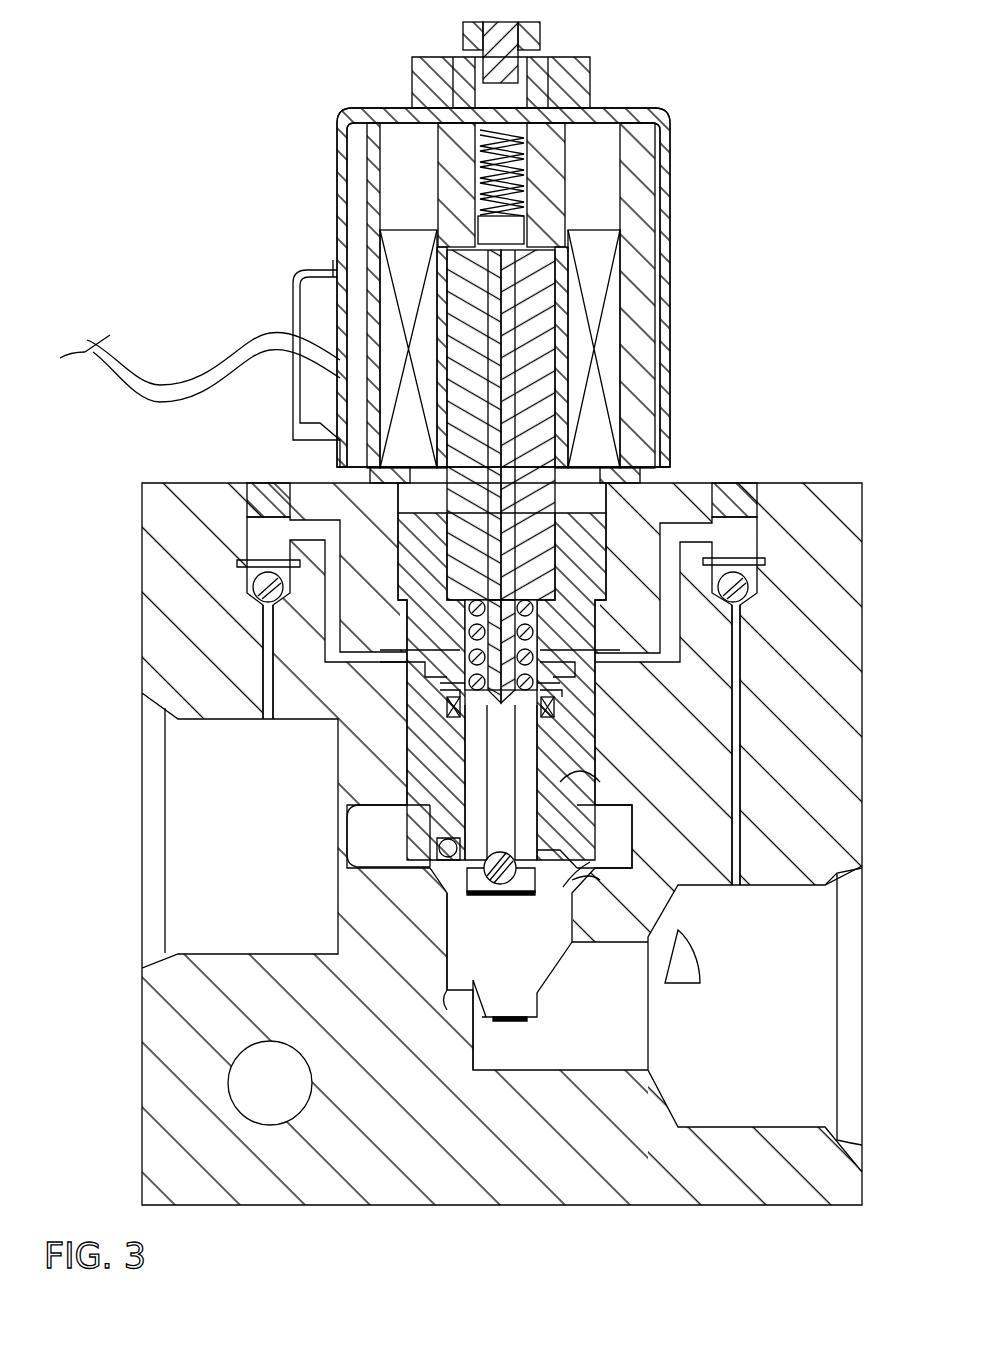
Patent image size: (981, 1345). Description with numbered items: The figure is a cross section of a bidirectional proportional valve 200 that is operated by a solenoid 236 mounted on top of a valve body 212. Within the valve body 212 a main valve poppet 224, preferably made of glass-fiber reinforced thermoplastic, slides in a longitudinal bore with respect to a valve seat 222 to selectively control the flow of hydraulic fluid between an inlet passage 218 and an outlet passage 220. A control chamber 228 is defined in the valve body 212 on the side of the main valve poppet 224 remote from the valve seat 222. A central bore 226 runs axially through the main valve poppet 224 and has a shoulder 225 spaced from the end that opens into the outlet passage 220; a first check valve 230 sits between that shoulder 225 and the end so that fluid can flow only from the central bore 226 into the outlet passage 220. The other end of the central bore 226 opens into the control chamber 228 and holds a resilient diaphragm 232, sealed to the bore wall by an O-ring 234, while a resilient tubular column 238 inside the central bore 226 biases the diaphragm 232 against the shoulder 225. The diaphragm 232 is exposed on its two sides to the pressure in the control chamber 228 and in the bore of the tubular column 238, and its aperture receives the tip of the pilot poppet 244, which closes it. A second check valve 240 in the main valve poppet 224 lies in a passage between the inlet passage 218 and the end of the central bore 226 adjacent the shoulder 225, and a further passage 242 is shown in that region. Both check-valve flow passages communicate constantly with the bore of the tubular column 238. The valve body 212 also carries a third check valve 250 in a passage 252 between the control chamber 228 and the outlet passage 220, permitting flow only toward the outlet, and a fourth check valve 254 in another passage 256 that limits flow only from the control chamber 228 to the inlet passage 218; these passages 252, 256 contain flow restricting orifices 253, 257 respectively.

The bidirectional proportional valve 200 is at (280, 152).
The valve body 212 is at (808, 480).
The inlet passage 218 is at (276, 862).
The outlet passage 220 is at (779, 1027).
The valve seat 222 is at (534, 900).
The main valve poppet 224 is at (585, 766).
The shoulder 225 is at (575, 873).
The central bore 226 is at (565, 790).
The control chamber 228 is at (562, 658).
The first check valve 230 is at (504, 900).
The resilient diaphragm 232 is at (540, 708).
The O-ring 234 is at (447, 712).
The solenoid 236 is at (672, 214).
The resilient tubular column 238 is at (470, 770).
The second check valve 240 is at (438, 849).
The passage 242 is at (352, 812).
The pilot poppet 244 is at (505, 300).
The third check valve 250 is at (741, 589).
The passage 252 is at (742, 634).
The flow restricting orifice 253 is at (742, 778).
The fourth check valve 254 is at (247, 572).
The passage 256 is at (258, 646).
The flow restricting orifice 257 is at (262, 700).